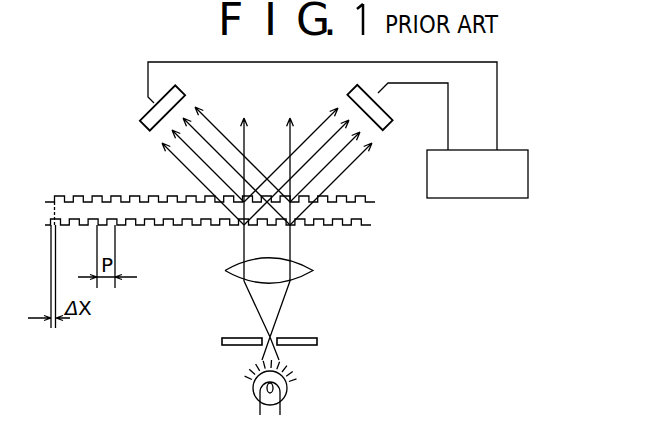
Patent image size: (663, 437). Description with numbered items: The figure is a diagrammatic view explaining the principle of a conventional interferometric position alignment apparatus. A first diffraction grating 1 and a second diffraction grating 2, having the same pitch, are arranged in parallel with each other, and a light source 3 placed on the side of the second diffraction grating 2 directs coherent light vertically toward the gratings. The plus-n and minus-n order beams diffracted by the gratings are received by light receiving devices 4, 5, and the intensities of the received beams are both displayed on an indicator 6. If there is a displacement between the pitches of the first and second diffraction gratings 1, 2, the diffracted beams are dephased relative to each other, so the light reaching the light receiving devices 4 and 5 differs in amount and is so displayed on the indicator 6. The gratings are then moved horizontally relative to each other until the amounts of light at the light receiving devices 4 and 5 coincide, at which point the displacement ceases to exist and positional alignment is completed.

The first diffraction grating 1 is at (100, 196).
The second diffraction grating 2 is at (173, 226).
The light source 3 is at (310, 364).
The light receiving device 4 is at (392, 114).
The light receiving device 5 is at (140, 118).
The indicator 6 is at (528, 190).